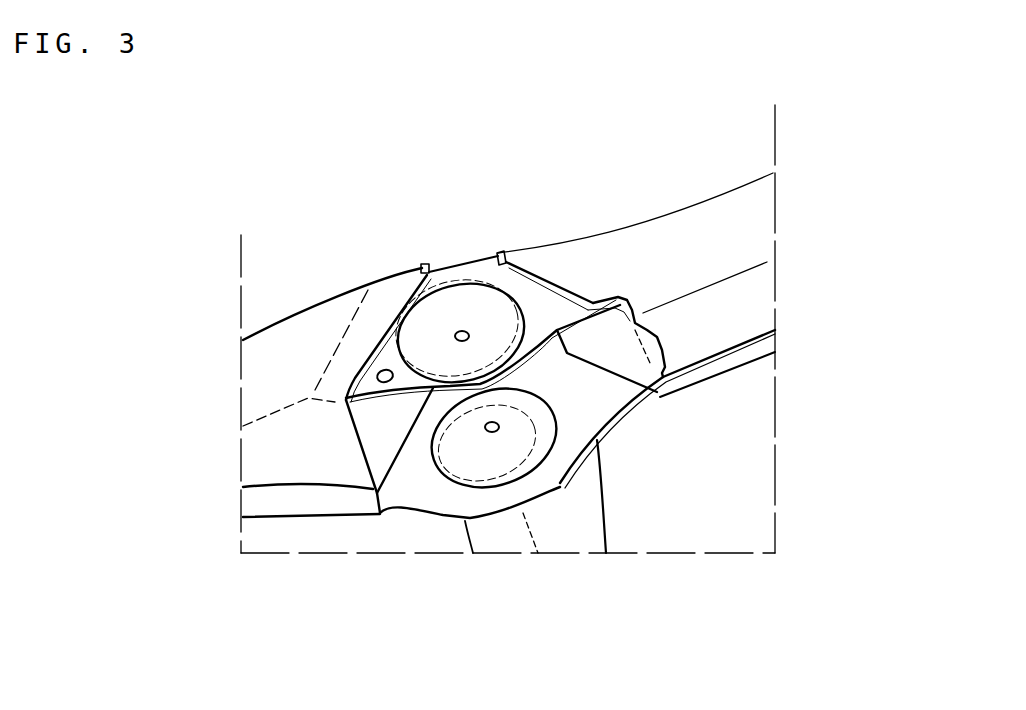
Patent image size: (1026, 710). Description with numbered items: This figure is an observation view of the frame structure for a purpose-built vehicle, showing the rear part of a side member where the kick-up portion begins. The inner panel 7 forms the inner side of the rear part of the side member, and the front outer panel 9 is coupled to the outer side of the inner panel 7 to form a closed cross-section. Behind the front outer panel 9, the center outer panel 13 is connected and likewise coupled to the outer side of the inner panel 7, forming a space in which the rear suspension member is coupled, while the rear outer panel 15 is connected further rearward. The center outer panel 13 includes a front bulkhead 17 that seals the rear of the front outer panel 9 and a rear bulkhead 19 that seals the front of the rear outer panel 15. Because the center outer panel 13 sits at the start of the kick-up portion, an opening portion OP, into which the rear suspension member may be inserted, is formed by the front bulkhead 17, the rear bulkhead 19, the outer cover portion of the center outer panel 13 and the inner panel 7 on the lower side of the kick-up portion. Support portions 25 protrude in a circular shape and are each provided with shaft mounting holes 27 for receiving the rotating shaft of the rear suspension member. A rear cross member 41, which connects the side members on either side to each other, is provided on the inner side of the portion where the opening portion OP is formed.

The inner panel 7 is at (598, 395).
The front outer panel 9 is at (322, 320).
The center outer panel 13 is at (440, 275).
The rear outer panel 15 is at (640, 252).
The front bulkhead 17 is at (388, 438).
The rear bulkhead 19 is at (613, 354).
The support portions 25 is at (424, 354).
The shaft mounting holes 27 is at (492, 422).
The rear cross member 41 is at (575, 530).
The opening portion OP is at (561, 443).